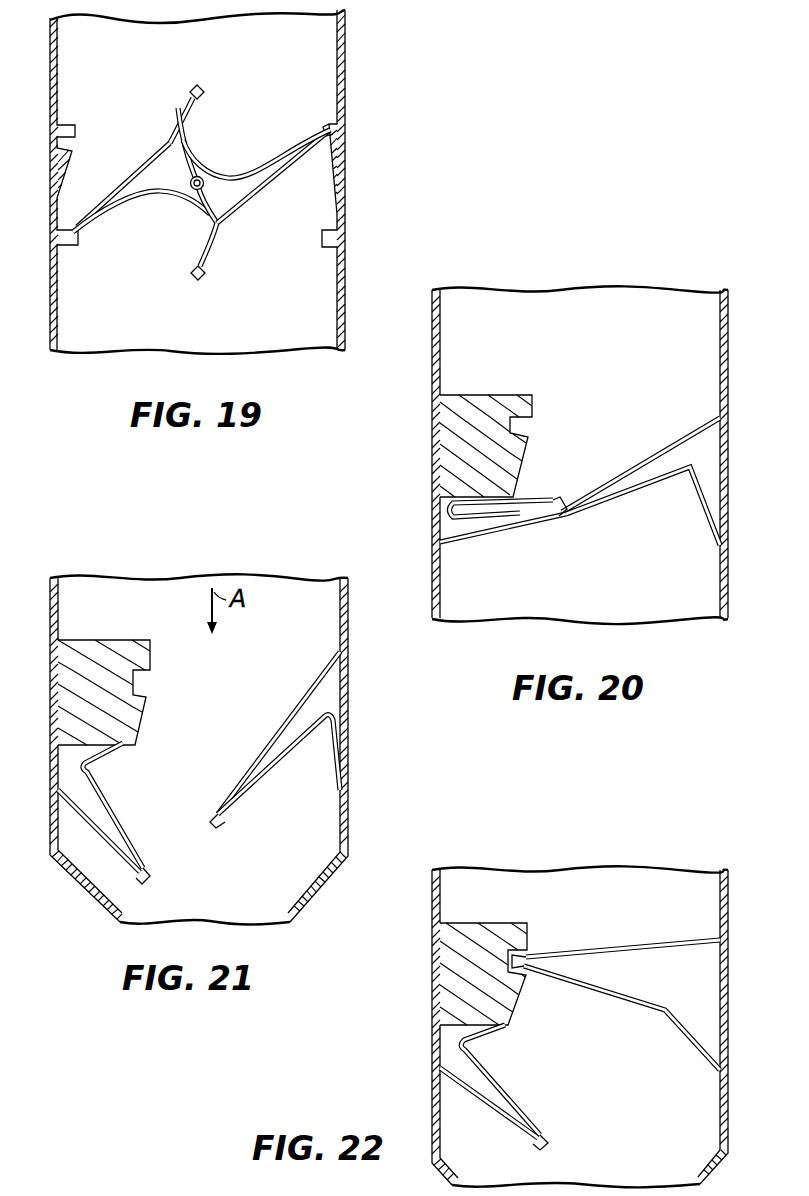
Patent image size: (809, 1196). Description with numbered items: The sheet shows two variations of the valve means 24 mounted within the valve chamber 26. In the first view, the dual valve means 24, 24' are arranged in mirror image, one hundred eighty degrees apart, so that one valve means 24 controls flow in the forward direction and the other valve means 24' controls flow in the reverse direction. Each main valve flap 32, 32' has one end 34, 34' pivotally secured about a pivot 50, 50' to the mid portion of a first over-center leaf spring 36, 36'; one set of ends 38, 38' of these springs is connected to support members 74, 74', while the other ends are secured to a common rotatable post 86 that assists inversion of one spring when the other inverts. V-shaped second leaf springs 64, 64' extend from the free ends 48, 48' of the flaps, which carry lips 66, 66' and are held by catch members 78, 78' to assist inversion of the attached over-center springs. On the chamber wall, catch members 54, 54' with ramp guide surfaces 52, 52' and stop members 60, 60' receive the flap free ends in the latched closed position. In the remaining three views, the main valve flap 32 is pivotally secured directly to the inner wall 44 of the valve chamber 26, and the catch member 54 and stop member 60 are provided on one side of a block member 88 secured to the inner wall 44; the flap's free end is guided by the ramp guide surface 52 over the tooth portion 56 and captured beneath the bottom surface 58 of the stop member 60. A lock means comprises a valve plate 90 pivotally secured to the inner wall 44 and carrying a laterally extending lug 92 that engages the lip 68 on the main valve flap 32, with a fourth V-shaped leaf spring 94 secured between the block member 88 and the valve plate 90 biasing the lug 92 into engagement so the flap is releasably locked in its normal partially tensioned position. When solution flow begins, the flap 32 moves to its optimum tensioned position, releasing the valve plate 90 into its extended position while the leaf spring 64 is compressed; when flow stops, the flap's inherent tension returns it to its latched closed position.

In FIG. 19, the valve means 24 is at (121, 54).
In FIG. 19, the second valve means 24' is at (262, 307).
In FIG. 19, the valve chamber 26 is at (349, 70).
In FIG. 20, the valve chamber 26 is at (730, 342).
In FIG. 21, the valve chamber 26 is at (350, 648).
In FIG. 22, the valve chamber 26 is at (730, 972).
In FIG. 19, the main valve flap 32 is at (91, 186).
In FIG. 20, the main valve flap 32 is at (641, 465).
In FIG. 21, the main valve flap 32 is at (279, 733).
In FIG. 22, the main valve flap 32 is at (623, 936).
In FIG. 19, the second main valve flap 32' is at (294, 189).
In FIG. 19, the end of main valve flap 34 is at (123, 173).
In FIG. 21, the end of main valve flap 34 is at (369, 676).
In FIG. 22, the end of main valve flap 34 is at (689, 926).
In FIG. 19, the end of second main valve flap 34' is at (273, 179).
In FIG. 19, the first over-center leaf spring 36 is at (163, 120).
In FIG. 19, the second first over-center leaf spring 36' is at (237, 244).
In FIG. 19, the ends of leaf spring 38 is at (168, 86).
In FIG. 19, the ends of second leaf spring 38' is at (237, 266).
In FIG. 20, the inner wall 44 is at (441, 385).
In FIG. 19, the free end of main valve flap 48 is at (95, 251).
In FIG. 19, the free end of second main valve flap 48' is at (373, 156).
In FIG. 19, the pivot 50 is at (203, 162).
In FIG. 20, the pivot 50 is at (698, 400).
In FIG. 21, the pivot 50 is at (321, 654).
In FIG. 22, the pivot 50 is at (696, 965).
In FIG. 19, the pivot of second valve flap 50' is at (228, 200).
In FIG. 19, the ramp guide surface 52 is at (35, 207).
In FIG. 20, the ramp guide surface 52 is at (542, 472).
In FIG. 21, the ramp guide surface 52 is at (169, 718).
In FIG. 22, the ramp guide surface 52 is at (534, 1021).
In FIG. 19, the ramp guide surface of second catch member 52' is at (375, 186).
In FIG. 19, the catch member 54 is at (34, 183).
In FIG. 20, the catch member 54 is at (549, 447).
In FIG. 19, the second catch member 54' is at (375, 211).
In FIG. 19, the tooth portion 56 is at (70, 157).
In FIG. 20, the tooth portion 56 is at (530, 440).
In FIG. 21, the tooth portion 56 is at (150, 690).
In FIG. 22, the tooth portion 56 is at (527, 970).
In FIG. 19, the bottom surface of stop member 58 is at (76, 133).
In FIG. 20, the bottom surface of stop member 58 is at (533, 422).
In FIG. 21, the bottom surface of stop member 58 is at (151, 672).
In FIG. 19, the stop member 60 is at (75, 98).
In FIG. 20, the stop member 60 is at (512, 369).
In FIG. 21, the stop member 60 is at (128, 616).
In FIG. 22, the stop member 60 is at (513, 901).
In FIG. 19, the second stop member 60' is at (311, 269).
In FIG. 19, the V-shaped leaf spring 64 is at (141, 211).
In FIG. 20, the V-shaped leaf spring 64 is at (669, 498).
In FIG. 21, the V-shaped leaf spring 64 is at (308, 758).
In FIG. 22, the V-shaped leaf spring 64 is at (622, 1018).
In FIG. 19, the second V-shaped leaf spring 64' is at (256, 152).
In FIG. 19, the laterally extending lip 66 is at (36, 233).
In FIG. 20, the laterally extending lip 66 is at (589, 533).
In FIG. 21, the laterally extending lip 66 is at (243, 826).
In FIG. 19, the second laterally extending lip 66' is at (371, 129).
In FIG. 20, the laterally extending lip 68 is at (553, 515).
In FIG. 21, the laterally extending lip 68 is at (212, 814).
In FIG. 22, the laterally extending lip 68 is at (530, 955).
In FIG. 19, the valve chamber support member 74 is at (196, 70).
In FIG. 19, the second valve chamber support member 74' is at (184, 293).
In FIG. 19, the catch member 78 is at (72, 280).
In FIG. 19, the second catch member 78' is at (377, 101).
In FIG. 19, the rotatable post 86 is at (190, 184).
In FIG. 20, the block member 88 is at (460, 440).
In FIG. 21, the block member 88 is at (85, 692).
In FIG. 22, the block member 88 is at (470, 978).
In FIG. 20, the valve plate 90 is at (470, 533).
In FIG. 21, the valve plate 90 is at (100, 835).
In FIG. 22, the valve plate 90 is at (470, 1100).
In FIG. 20, the lug 92 is at (570, 498).
In FIG. 21, the lug 92 is at (140, 885).
In FIG. 22, the lug 92 is at (536, 1150).
In FIG. 20, the fourth V-shaped leaf spring 94 is at (448, 510).
In FIG. 21, the fourth V-shaped leaf spring 94 is at (120, 810).
In FIG. 22, the fourth V-shaped leaf spring 94 is at (445, 1045).